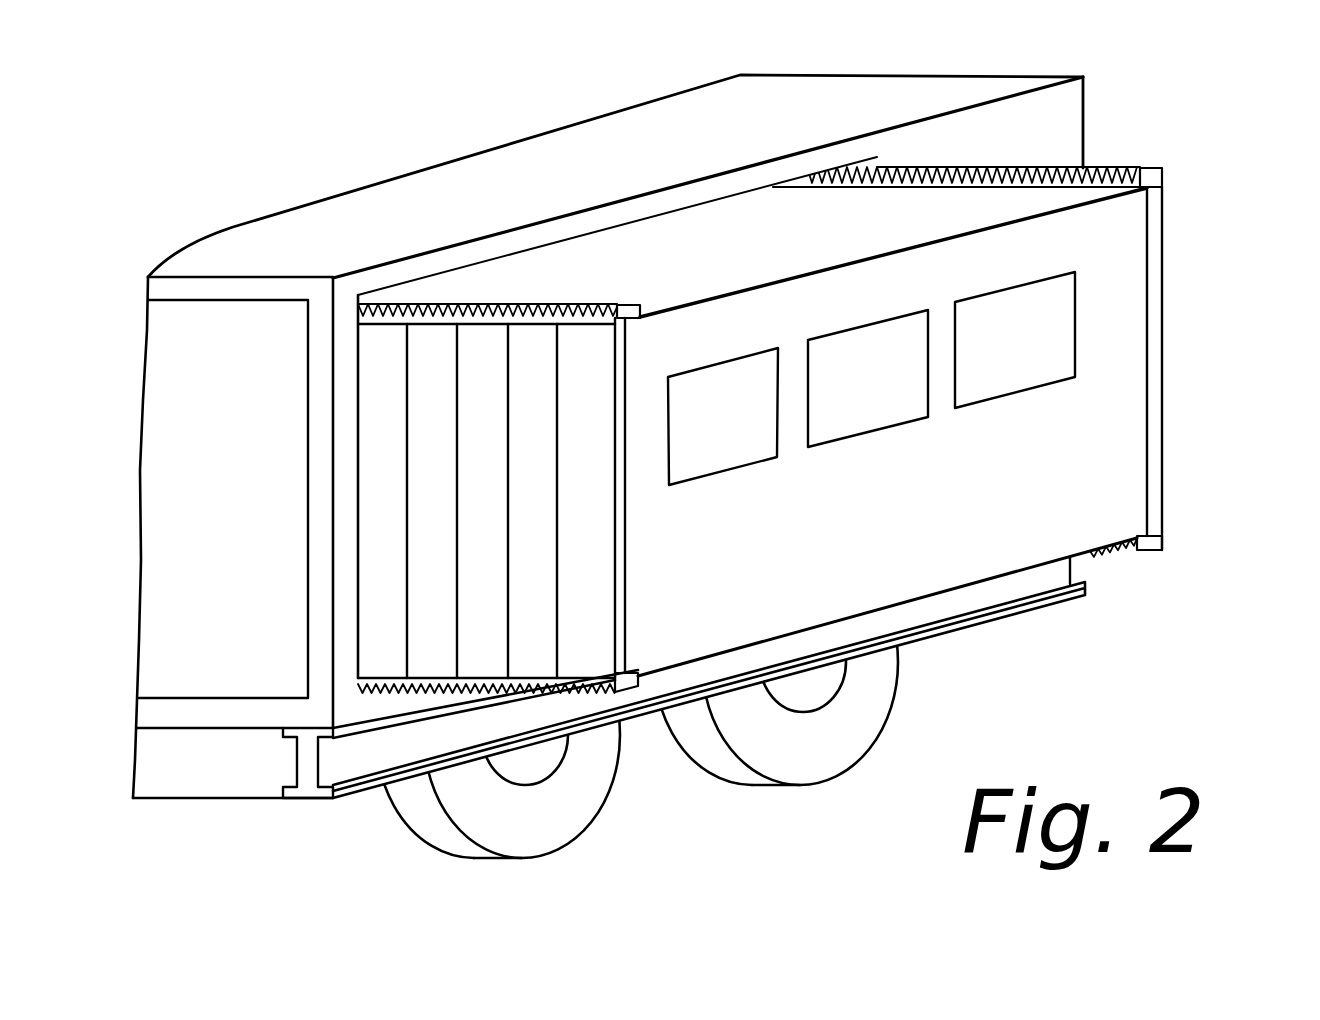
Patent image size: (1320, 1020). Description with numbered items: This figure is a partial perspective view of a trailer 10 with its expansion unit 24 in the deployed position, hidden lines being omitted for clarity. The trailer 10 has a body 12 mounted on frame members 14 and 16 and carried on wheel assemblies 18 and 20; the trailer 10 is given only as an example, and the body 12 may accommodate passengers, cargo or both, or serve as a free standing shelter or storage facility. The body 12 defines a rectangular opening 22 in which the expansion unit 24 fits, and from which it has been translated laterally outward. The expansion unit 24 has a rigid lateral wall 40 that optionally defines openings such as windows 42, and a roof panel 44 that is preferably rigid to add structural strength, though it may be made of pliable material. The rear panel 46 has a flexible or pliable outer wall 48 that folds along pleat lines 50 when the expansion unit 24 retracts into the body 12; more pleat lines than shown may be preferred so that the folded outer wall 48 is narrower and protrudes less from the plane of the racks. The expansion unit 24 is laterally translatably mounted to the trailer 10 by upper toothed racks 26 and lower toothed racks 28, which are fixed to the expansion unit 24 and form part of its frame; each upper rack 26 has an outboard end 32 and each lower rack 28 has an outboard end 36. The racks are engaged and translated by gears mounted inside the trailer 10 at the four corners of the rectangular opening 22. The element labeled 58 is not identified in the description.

The trailer 10 is at (343, 168).
The body 12 is at (665, 100).
The frame member 14 is at (185, 802).
The frame member 16 is at (1082, 580).
The wheel assembly 18 is at (883, 712).
The wheel assembly 20 is at (603, 787).
The rectangular opening 22 is at (578, 240).
The expansion unit 24 is at (950, 208).
The upper toothed rack 26 is at (440, 323).
The lower toothed rack 28 is at (420, 680).
The outboard end 32 is at (641, 312).
The outboard end 36 is at (635, 672).
The lateral wall 40 is at (1135, 455).
The window 42 is at (700, 383).
The roof panel 44 is at (657, 233).
The rear panel 46 is at (596, 594).
The outer wall 48 is at (602, 540).
The pleat line 50 is at (457, 500).
The rear edge member 58 is at (1167, 371).